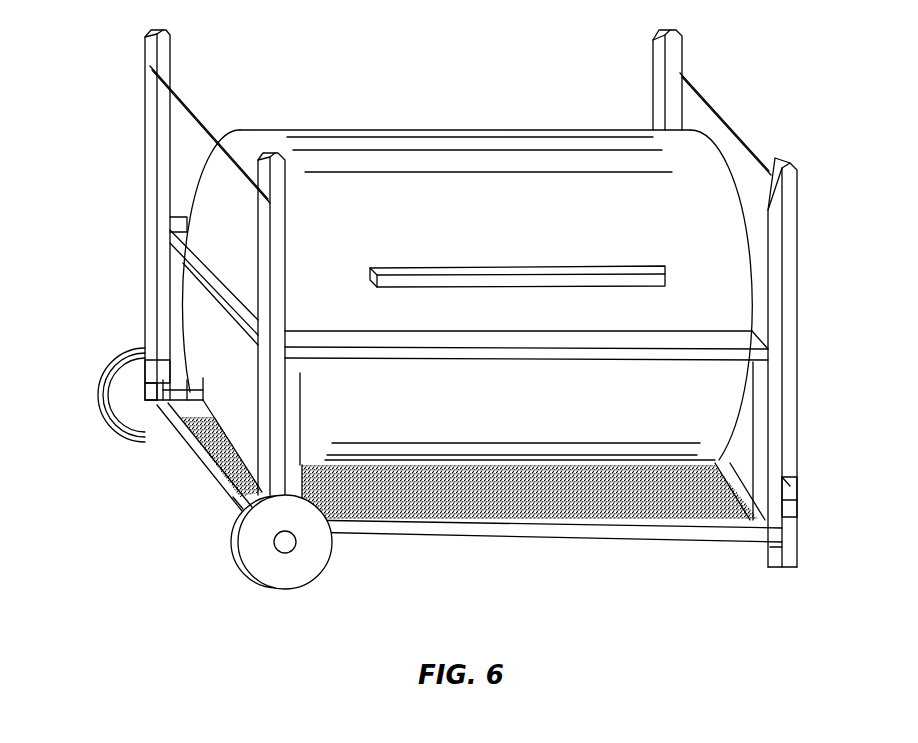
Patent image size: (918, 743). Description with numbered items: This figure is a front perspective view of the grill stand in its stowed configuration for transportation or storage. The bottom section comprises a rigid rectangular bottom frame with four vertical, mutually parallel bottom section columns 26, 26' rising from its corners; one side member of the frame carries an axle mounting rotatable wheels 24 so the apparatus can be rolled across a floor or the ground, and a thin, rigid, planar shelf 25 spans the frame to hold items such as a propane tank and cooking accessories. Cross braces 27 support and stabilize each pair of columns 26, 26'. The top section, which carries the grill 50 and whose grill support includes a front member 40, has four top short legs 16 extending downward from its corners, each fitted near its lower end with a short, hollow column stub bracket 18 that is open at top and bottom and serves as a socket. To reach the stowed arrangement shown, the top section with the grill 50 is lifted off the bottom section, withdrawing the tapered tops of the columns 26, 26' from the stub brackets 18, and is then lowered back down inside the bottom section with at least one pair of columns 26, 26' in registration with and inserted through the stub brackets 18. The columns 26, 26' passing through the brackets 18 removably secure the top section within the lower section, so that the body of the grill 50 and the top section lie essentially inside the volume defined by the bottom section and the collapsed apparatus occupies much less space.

The top short leg 16 is at (177, 291).
The column stub bracket 18 is at (110, 392).
The wheel 24 is at (147, 437).
The shelf 25 is at (590, 498).
The bottom section column 26 is at (183, 264).
The bottom section column 26' is at (719, 298).
The cross brace 27 is at (192, 112).
The front member 40 is at (526, 370).
The grill 50 is at (473, 236).